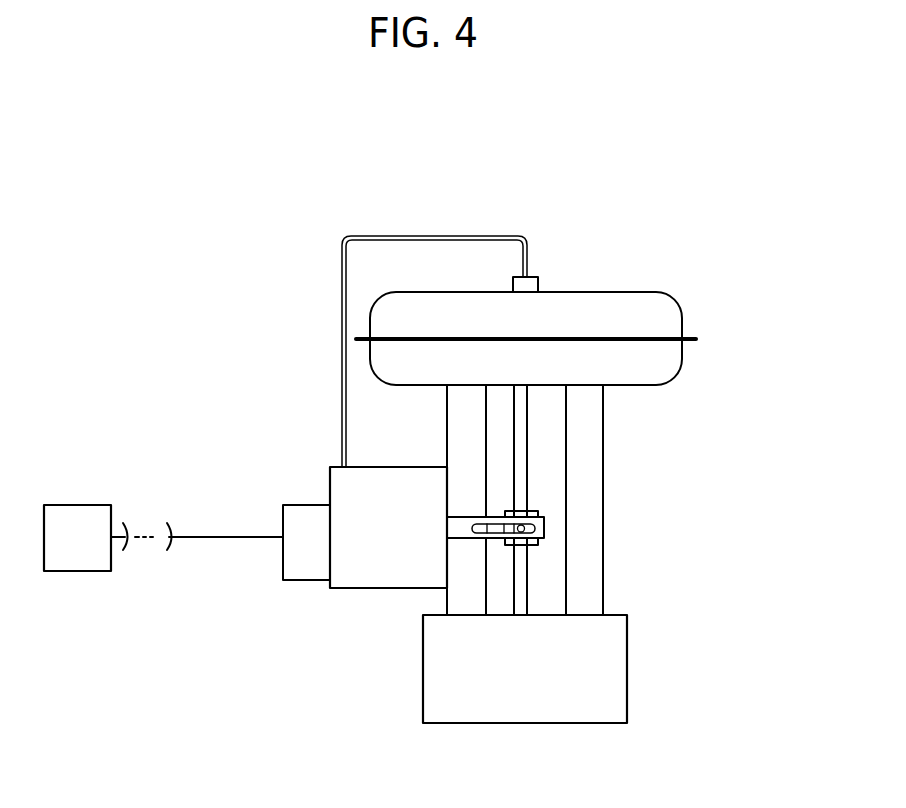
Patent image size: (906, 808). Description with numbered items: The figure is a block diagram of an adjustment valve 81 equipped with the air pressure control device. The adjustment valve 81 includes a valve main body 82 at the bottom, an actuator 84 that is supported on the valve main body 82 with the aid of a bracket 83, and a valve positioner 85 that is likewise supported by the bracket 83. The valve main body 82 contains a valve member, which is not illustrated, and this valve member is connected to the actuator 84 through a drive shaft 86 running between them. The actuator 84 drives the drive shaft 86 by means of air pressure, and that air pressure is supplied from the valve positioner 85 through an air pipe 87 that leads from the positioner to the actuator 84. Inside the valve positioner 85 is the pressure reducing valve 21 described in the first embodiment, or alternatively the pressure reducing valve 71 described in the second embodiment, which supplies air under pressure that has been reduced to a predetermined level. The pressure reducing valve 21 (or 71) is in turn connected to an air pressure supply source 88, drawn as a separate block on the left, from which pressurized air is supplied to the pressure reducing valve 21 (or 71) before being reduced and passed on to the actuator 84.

The adjustment valve 81 is at (242, 223).
The valve main body 82 is at (627, 662).
The bracket 83 is at (603, 503).
The actuator 84 is at (687, 315).
The valve positioner 85 is at (358, 592).
The drive shaft 86 is at (528, 437).
The air pipe 87 is at (421, 236).
The air pressure supply source 88 is at (77, 505).
The pressure reducing valve 21 is at (274, 495).
The pressure reducing valve 71 is at (293, 500).